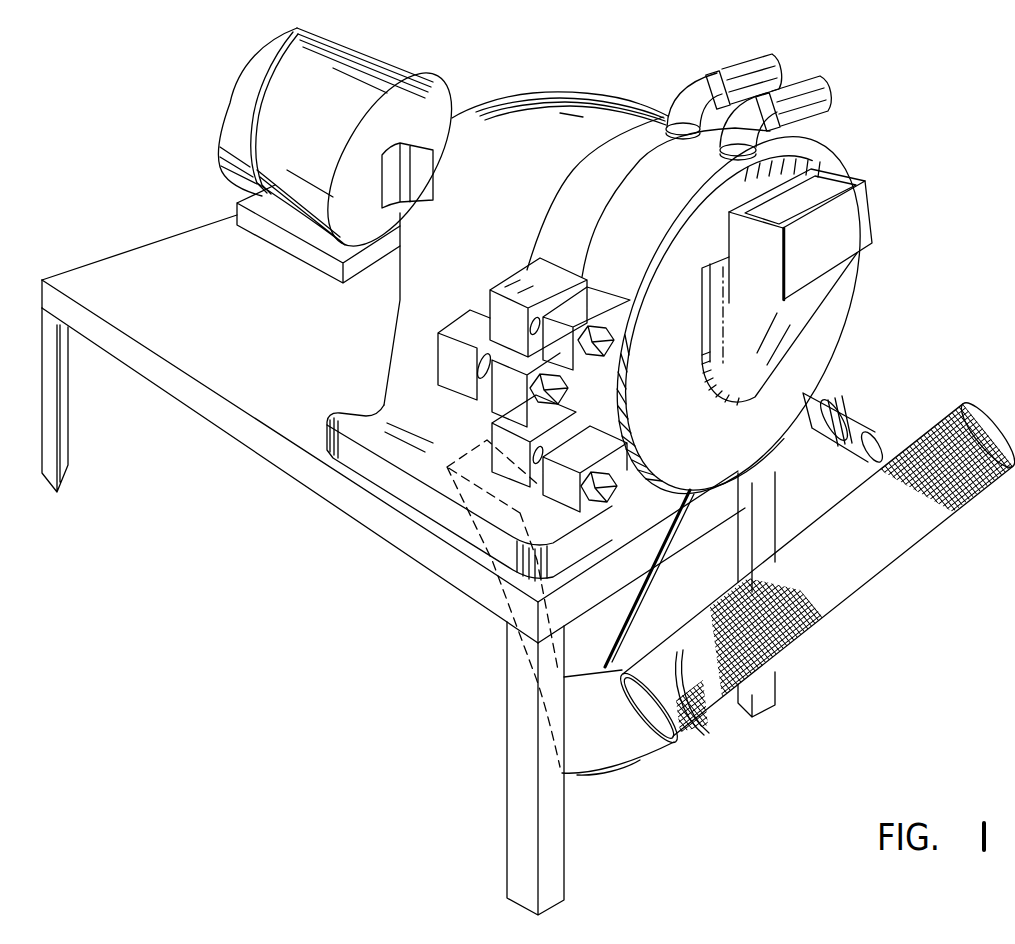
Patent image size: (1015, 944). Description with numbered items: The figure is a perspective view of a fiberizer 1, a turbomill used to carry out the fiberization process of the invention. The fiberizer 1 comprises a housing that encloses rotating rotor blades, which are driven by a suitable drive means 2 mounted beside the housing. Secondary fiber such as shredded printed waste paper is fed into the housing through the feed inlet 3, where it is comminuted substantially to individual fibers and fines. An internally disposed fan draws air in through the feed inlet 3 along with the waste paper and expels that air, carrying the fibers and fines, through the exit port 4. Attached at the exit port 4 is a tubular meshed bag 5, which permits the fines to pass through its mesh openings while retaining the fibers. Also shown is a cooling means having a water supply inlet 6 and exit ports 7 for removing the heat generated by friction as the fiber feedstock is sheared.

The fiberizer 1 is at (679, 30).
The drive means 2 is at (323, 129).
The feed inlet 3 is at (837, 247).
The exit port 4 is at (628, 607).
The tubular meshed bag 5 is at (878, 546).
The water supply inlet 6 is at (880, 445).
The exit ports 7 is at (828, 86).